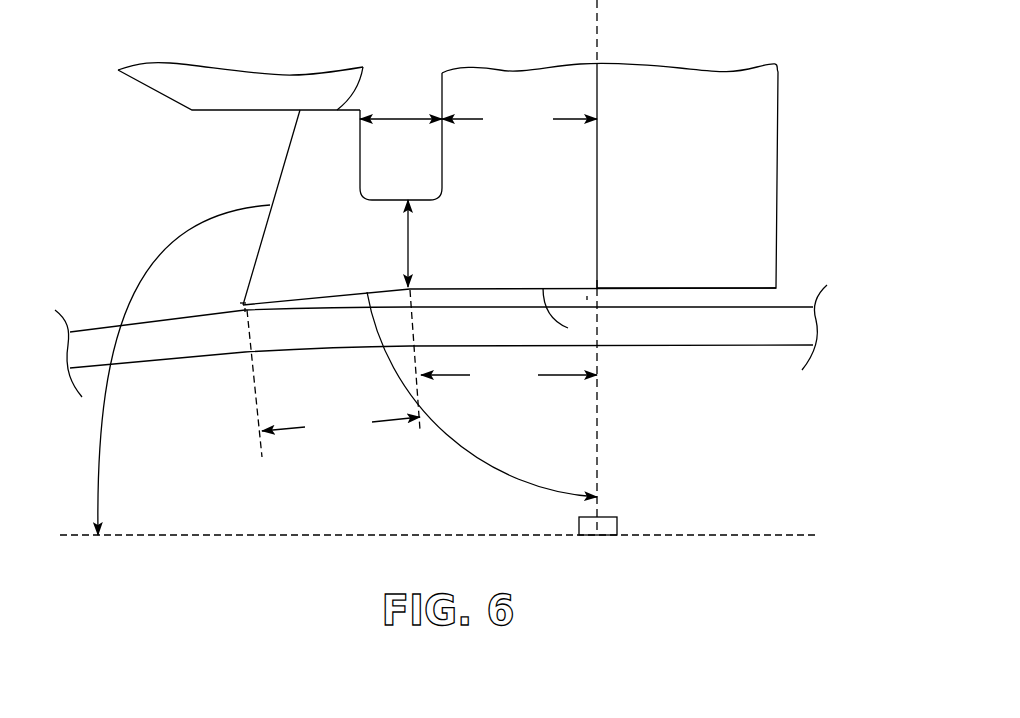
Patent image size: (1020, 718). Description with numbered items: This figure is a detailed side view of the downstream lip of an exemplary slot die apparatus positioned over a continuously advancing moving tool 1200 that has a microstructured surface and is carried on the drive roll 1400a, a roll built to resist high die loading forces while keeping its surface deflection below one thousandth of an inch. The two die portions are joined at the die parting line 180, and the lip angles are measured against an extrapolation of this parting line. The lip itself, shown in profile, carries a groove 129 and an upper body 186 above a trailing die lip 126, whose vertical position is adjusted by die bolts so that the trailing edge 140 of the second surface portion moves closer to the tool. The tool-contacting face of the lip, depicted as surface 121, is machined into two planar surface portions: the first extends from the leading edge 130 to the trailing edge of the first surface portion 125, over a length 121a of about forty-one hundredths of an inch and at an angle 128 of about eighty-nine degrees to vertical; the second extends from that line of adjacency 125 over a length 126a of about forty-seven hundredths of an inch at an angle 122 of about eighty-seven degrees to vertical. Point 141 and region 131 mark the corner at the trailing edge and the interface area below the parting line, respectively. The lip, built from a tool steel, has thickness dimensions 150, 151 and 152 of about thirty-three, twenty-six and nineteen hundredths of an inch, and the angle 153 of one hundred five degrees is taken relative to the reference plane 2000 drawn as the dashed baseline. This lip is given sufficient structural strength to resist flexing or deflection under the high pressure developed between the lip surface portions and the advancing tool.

The blade portion 186 is at (173, 102).
The trailing die lip 126 is at (277, 207).
The groove 129 is at (398, 197).
The die parting line 180 is at (598, 98).
The top surface 121 is at (493, 287).
The moving tool 1200 is at (177, 360).
The drive roll 1400a is at (272, 503).
The trailing edge of the second surface portion 140 is at (243, 303).
The contact point 141 is at (243, 310).
The trailing edge of the first surface portion 125 is at (412, 286).
The dimension 151 is at (403, 118).
The dimension 150 is at (519, 119).
The dimension 152 is at (404, 243).
The length of the first surface portion 121a is at (509, 375).
The length of the second surface portion 126a is at (341, 423).
The angle 153 is at (177, 233).
The angle of the second surface portion 122 is at (497, 468).
The angle of the first surface portion 128 is at (595, 333).
The leading edge 130 is at (597, 285).
The interface region 131 is at (587, 298).
The reference plane 2000 is at (757, 535).